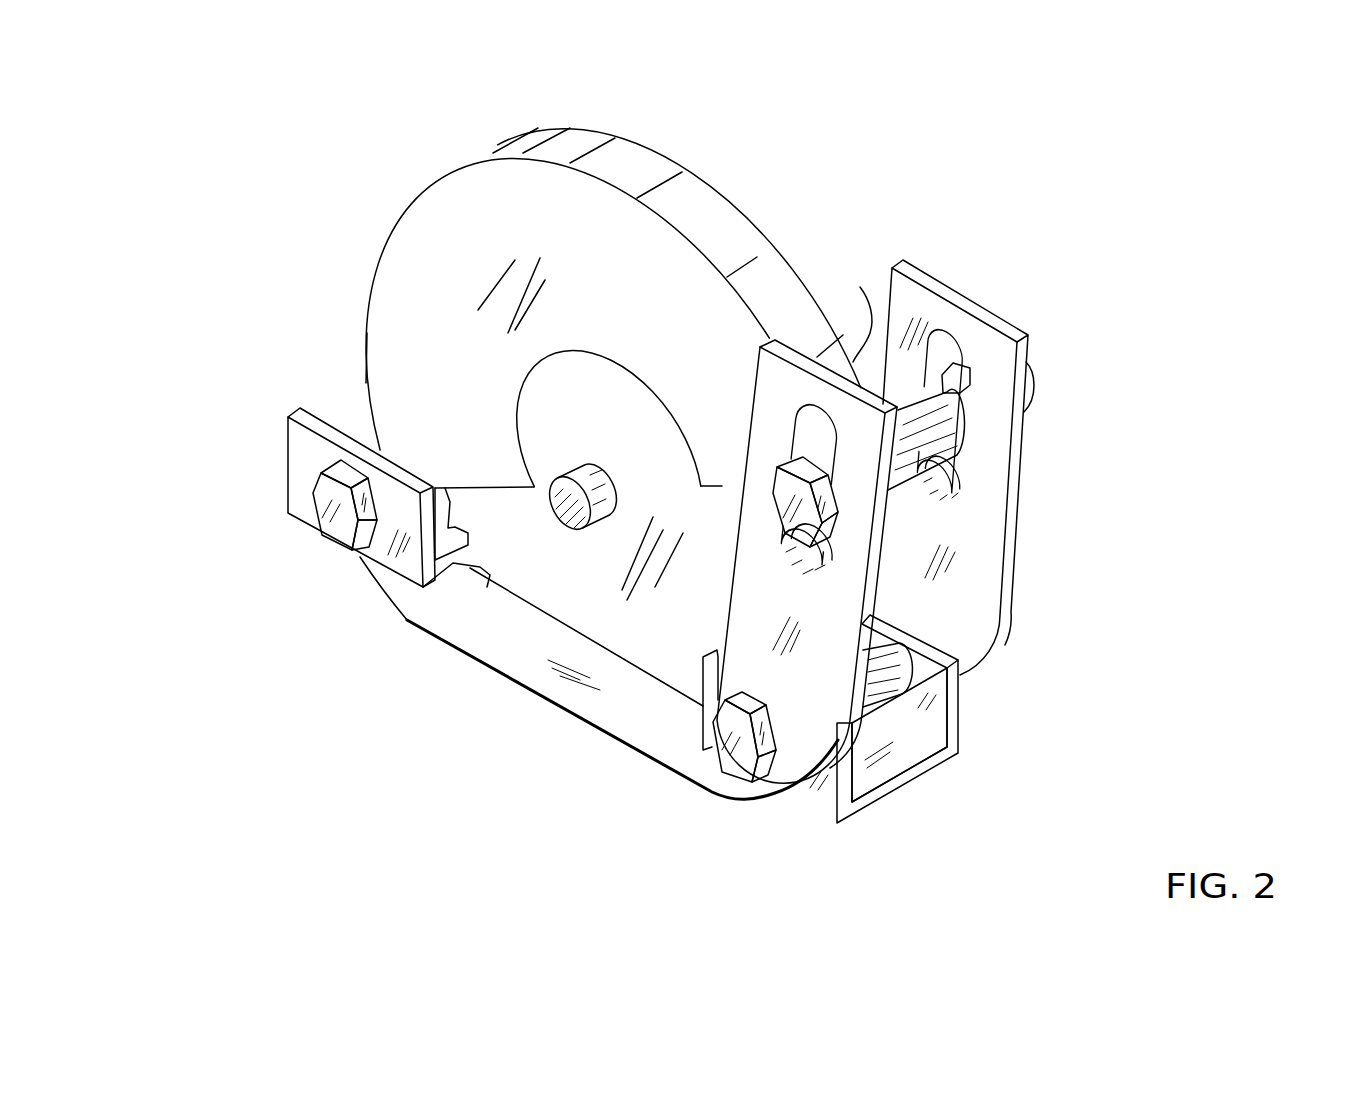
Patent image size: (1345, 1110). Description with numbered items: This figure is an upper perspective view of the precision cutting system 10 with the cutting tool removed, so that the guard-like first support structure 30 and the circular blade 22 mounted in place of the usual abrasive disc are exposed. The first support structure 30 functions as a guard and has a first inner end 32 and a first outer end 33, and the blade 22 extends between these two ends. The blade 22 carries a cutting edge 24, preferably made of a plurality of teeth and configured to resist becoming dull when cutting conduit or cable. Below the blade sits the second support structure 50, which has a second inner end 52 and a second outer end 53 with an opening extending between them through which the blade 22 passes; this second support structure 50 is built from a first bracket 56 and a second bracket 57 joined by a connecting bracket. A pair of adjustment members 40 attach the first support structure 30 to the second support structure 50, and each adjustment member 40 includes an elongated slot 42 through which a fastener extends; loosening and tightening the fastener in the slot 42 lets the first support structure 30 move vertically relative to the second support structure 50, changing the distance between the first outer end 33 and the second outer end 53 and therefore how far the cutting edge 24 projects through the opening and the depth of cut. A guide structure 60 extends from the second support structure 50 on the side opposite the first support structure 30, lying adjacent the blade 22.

The precision cutting system 10 is at (200, 151).
The blade 22 is at (557, 587).
The cutting edge 24 is at (487, 587).
The first support structure 30 is at (676, 159).
The first inner end 32 is at (377, 421).
The first outer end 33 is at (860, 287).
The adjustment member 40 is at (1012, 559).
The slot 42 is at (962, 347).
The second support structure 50 is at (935, 782).
The second inner end 52 is at (300, 458).
The second outer end 53 is at (937, 723).
The first bracket 56 is at (380, 553).
The second bracket 57 is at (823, 800).
The guide structure 60 is at (568, 730).